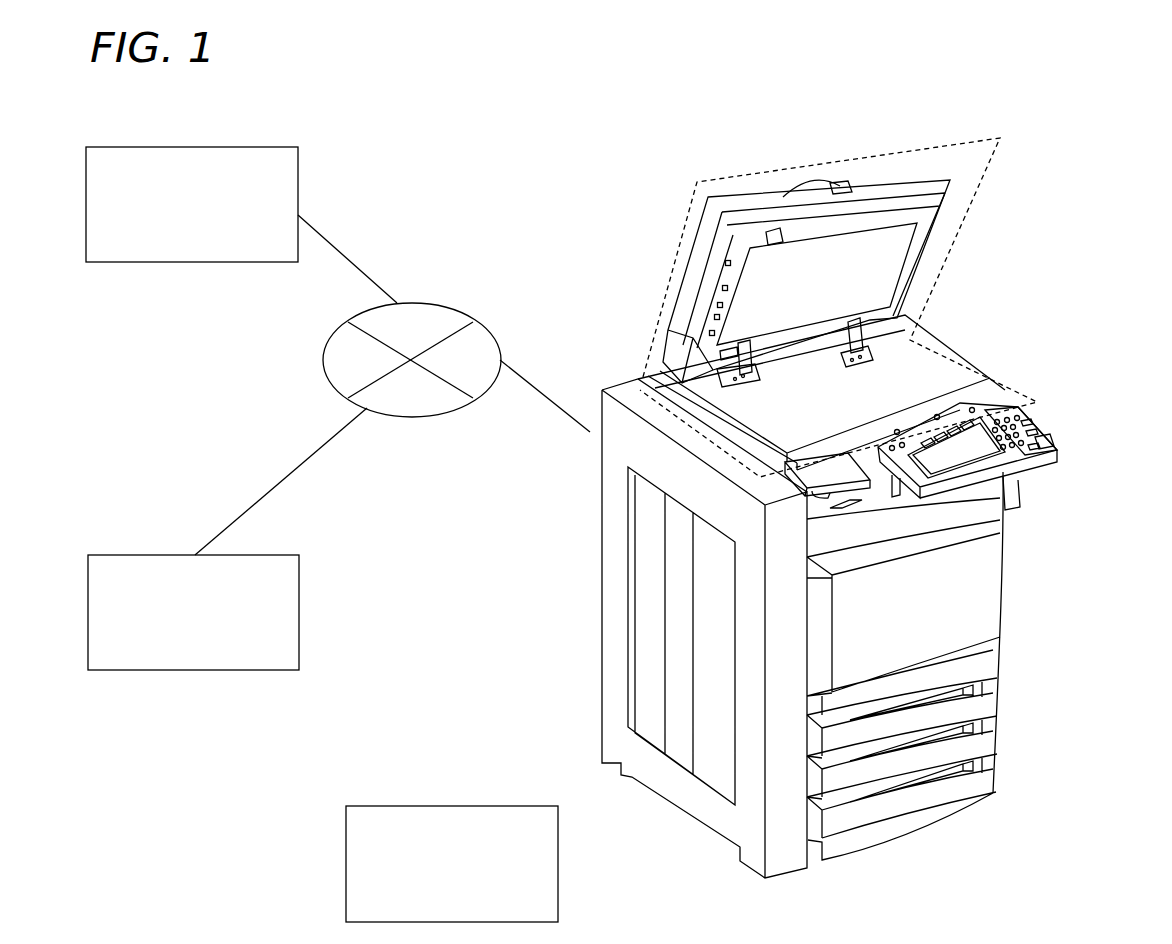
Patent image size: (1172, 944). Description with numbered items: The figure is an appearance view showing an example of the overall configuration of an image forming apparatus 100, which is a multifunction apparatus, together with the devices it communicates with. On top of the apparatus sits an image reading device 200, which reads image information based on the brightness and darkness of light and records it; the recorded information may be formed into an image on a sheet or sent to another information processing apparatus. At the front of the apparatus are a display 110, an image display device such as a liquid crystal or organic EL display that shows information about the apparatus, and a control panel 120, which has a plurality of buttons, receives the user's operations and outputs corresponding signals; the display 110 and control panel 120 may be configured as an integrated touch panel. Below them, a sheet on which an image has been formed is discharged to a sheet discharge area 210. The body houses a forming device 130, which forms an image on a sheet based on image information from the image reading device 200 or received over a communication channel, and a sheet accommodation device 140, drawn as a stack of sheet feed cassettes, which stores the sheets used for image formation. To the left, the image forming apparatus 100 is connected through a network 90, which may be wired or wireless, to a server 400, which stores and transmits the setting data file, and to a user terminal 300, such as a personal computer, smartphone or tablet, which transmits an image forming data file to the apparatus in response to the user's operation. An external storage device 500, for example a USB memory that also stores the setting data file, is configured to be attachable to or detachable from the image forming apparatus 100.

The image forming apparatus 100 is at (821, 122).
The image reading device 200 is at (940, 147).
The display 110 is at (980, 452).
The control panel 120 is at (1040, 443).
The sheet discharge area 210 is at (895, 508).
The forming device 130 is at (978, 607).
The sheet accommodation device 140 is at (1020, 661).
The network 90 is at (452, 307).
The server 400 is at (246, 146).
The user terminal 300 is at (130, 554).
The external storage device 500 is at (493, 805).